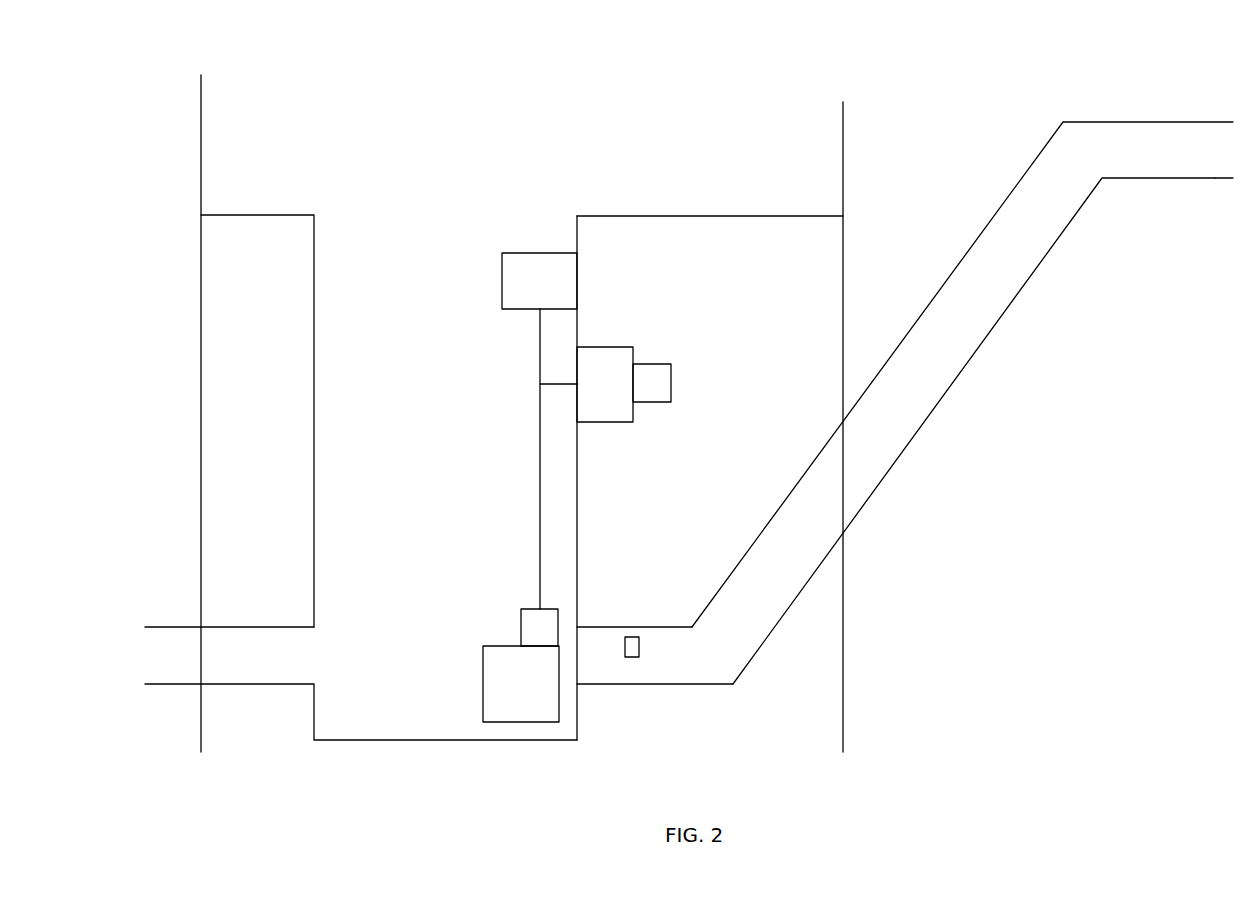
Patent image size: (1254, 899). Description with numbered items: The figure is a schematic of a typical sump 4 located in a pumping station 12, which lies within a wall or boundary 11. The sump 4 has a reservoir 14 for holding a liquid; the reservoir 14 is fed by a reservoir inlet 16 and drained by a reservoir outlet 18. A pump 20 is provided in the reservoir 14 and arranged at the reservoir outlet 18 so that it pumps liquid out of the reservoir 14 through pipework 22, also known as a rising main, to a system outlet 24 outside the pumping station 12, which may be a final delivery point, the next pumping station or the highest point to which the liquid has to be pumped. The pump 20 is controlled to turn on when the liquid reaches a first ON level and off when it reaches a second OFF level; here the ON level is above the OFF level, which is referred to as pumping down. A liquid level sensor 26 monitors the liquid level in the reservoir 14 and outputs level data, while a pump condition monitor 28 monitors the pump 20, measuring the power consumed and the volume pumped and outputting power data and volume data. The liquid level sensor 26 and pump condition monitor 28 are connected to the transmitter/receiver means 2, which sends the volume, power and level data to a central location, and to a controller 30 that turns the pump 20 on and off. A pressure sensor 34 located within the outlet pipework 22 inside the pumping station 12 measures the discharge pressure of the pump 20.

The transmitter/receiver means 2 is at (652, 364).
The sump 4 is at (327, 175).
The wall or boundary 11 is at (202, 124).
The pumping station 12 is at (778, 120).
The reservoir 14 is at (315, 418).
The reservoir inlet 16 is at (262, 627).
The reservoir outlet 18 is at (605, 687).
The pump 20 is at (545, 707).
The pipework 22 is at (905, 450).
The system outlet 24 is at (1215, 158).
The liquid level sensor 26 is at (533, 253).
The pump condition monitor 28 is at (547, 617).
The controller 30 is at (600, 347).
The pressure sensor 34 is at (637, 640).